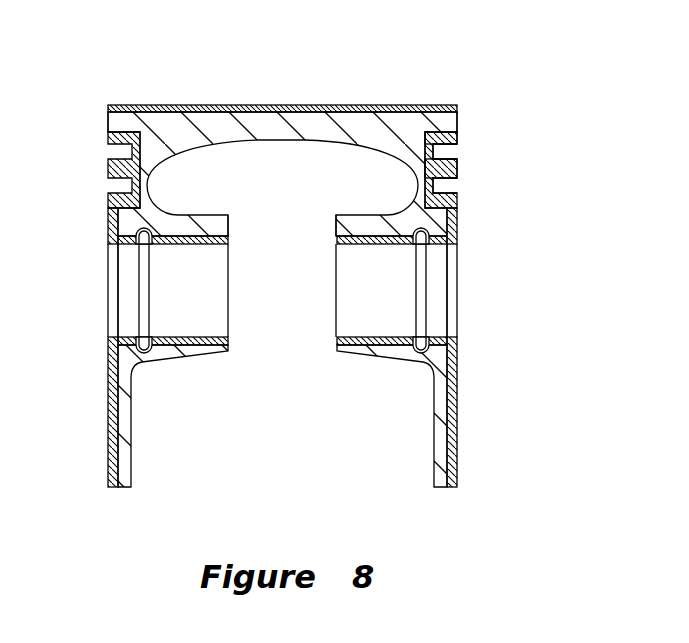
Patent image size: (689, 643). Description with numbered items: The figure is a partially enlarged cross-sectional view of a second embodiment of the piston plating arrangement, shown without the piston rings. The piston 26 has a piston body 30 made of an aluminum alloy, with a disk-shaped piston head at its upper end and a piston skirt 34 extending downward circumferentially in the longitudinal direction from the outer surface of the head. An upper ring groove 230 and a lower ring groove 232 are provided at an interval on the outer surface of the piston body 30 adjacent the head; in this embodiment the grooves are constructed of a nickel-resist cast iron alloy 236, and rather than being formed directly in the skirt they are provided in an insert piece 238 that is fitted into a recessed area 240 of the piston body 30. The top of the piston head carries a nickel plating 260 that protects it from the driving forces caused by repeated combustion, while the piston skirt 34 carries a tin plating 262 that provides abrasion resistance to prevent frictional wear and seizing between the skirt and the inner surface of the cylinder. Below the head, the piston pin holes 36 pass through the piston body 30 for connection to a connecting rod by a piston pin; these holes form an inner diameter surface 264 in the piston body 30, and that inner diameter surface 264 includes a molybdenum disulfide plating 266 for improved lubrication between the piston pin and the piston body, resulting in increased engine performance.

The piston 26 is at (330, 246).
The piston body 30 is at (177, 133).
The piston skirt 34 is at (455, 427).
The piston pin holes 36 is at (173, 263).
The upper ring groove 230 is at (458, 122).
The lower ring groove 232 is at (458, 188).
The nickel-resist cast iron alloy 236 is at (458, 149).
The insert piece 238 is at (458, 168).
The recessed area 240 is at (413, 135).
The nickel plating 260 is at (333, 105).
The tin plating 262 is at (458, 373).
The inner diameter surface 264 is at (412, 233).
The molybdenum disulfide plating 266 is at (368, 246).